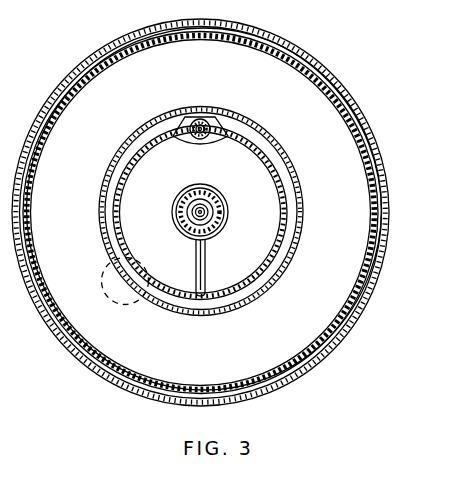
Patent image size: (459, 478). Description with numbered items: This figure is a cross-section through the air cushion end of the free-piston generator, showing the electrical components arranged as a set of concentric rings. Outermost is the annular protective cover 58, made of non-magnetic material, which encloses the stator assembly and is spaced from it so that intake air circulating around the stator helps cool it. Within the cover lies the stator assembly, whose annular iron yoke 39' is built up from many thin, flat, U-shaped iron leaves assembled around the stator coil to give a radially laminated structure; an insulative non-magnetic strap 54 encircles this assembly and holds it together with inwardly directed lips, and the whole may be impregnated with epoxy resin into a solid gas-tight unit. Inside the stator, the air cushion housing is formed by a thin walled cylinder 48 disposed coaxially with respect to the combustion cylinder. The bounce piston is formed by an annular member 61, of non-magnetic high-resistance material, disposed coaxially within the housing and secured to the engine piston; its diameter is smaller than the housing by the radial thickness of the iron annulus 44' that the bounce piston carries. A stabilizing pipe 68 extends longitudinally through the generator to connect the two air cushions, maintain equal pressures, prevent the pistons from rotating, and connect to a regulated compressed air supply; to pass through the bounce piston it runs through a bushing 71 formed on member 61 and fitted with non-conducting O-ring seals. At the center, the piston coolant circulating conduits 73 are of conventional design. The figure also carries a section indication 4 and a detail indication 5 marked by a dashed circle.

The annular iron yoke 39' is at (226, 212).
The annular protective cover 58 is at (107, 47).
The insulative non-magnetic strap 54 is at (326, 91).
The iron annulus 44' is at (192, 211).
The thin walled cylinder 48 is at (301, 197).
The annular member 61 is at (119, 218).
The stabilizing pipe 68 is at (206, 140).
The bushing 71 is at (193, 140).
The piston coolant circulating conduits 73 is at (227, 213).
The detail region 5 is at (118, 305).
The section line 4 is at (208, 261).